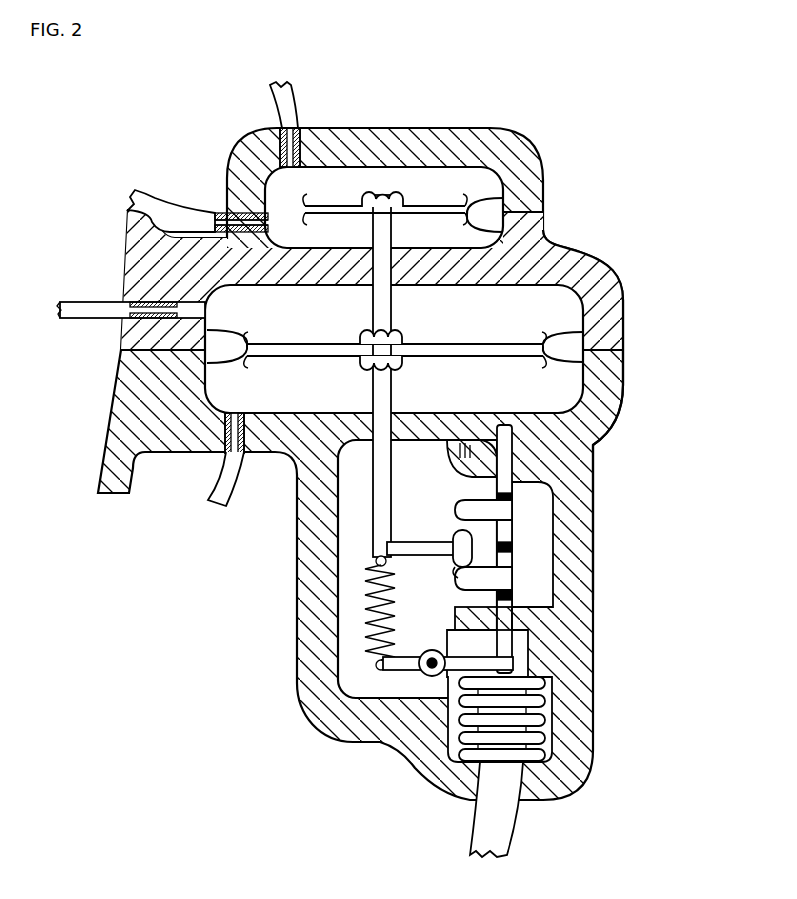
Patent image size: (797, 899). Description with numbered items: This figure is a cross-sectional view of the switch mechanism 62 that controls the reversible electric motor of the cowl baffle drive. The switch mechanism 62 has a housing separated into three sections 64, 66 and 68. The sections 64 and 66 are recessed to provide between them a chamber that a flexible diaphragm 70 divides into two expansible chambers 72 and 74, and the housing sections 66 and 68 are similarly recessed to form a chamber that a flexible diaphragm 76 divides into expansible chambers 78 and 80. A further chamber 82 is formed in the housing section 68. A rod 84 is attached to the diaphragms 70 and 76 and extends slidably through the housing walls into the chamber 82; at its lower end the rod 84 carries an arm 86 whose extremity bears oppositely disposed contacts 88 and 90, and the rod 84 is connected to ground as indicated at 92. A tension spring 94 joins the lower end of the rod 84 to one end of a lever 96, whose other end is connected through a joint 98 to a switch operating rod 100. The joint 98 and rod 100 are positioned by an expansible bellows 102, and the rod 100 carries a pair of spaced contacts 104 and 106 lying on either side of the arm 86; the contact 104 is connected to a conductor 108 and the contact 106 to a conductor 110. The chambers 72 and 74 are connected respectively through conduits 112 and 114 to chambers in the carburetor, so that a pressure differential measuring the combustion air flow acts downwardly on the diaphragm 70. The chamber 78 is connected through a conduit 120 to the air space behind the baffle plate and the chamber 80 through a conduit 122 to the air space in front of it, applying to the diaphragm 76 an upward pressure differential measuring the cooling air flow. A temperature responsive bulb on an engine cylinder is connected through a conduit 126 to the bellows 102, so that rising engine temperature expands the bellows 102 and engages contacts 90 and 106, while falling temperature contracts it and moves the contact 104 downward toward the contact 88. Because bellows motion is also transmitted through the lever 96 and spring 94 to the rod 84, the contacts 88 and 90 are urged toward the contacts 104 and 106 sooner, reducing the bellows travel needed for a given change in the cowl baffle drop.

The switch mechanism 62 is at (272, 592).
The housing section 64 is at (533, 175).
The housing section 66 is at (610, 285).
The housing section 68 is at (617, 393).
The flexible diaphragm 70 is at (482, 226).
The expansible chamber 72 is at (444, 193).
The expansible chamber 74 is at (442, 241).
The flexible diaphragm 76 is at (563, 330).
The expansible chamber 78 is at (461, 326).
The expansible chamber 80 is at (456, 395).
The chamber 82 is at (437, 490).
The rod 84 is at (380, 302).
The arm 86 is at (410, 542).
The contact 88 is at (460, 532).
The contact 90 is at (463, 573).
The ground connection 92 is at (448, 455).
The tension spring 94 is at (395, 602).
The lever 96 is at (403, 658).
The joint 98 is at (487, 648).
The switch operating rod 100 is at (502, 613).
The expansible bellows 102 is at (537, 702).
The contact 104 is at (500, 514).
The contact 106 is at (503, 565).
The conductor 108 is at (505, 523).
The conductor 110 is at (505, 563).
The conduit 112 is at (288, 93).
The conduit 114 is at (182, 217).
The conduit 120 is at (90, 318).
The conduit 122 is at (233, 490).
The conduit 126 is at (512, 823).